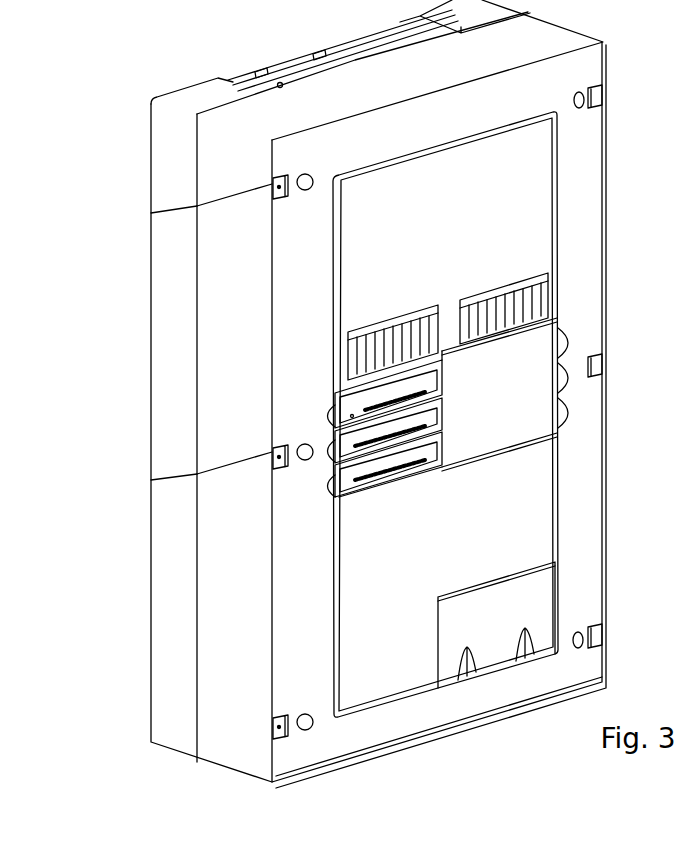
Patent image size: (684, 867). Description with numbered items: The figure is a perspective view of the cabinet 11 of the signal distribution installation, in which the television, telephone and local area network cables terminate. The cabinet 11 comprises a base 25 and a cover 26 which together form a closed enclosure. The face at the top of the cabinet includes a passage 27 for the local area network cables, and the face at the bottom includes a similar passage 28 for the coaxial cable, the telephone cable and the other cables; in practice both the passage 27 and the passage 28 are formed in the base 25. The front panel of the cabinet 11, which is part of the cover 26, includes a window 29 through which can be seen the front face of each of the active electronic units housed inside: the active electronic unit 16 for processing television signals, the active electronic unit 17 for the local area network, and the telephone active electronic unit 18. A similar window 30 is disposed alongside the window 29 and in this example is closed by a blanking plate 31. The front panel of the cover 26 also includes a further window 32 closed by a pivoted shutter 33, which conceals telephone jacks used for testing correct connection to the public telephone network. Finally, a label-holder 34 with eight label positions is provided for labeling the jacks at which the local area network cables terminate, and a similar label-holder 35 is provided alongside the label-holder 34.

The cabinet 11 is at (112, 133).
The active electronic unit for processing television signals 16 is at (425, 378).
The active electronic unit for the local area network 17 is at (425, 410).
The telephone active electronic unit 18 is at (425, 445).
The base 25 is at (155, 347).
The cover 26 is at (215, 412).
The passage 27 is at (337, 63).
The passage 28 is at (463, 735).
The window 29 is at (322, 502).
The window 30 is at (472, 475).
The blanking plate 31 is at (530, 425).
The further window 32 is at (510, 675).
The pivoted shutter 33 is at (484, 626).
The label-holder 34 is at (388, 325).
The label-holder 35 is at (505, 295).